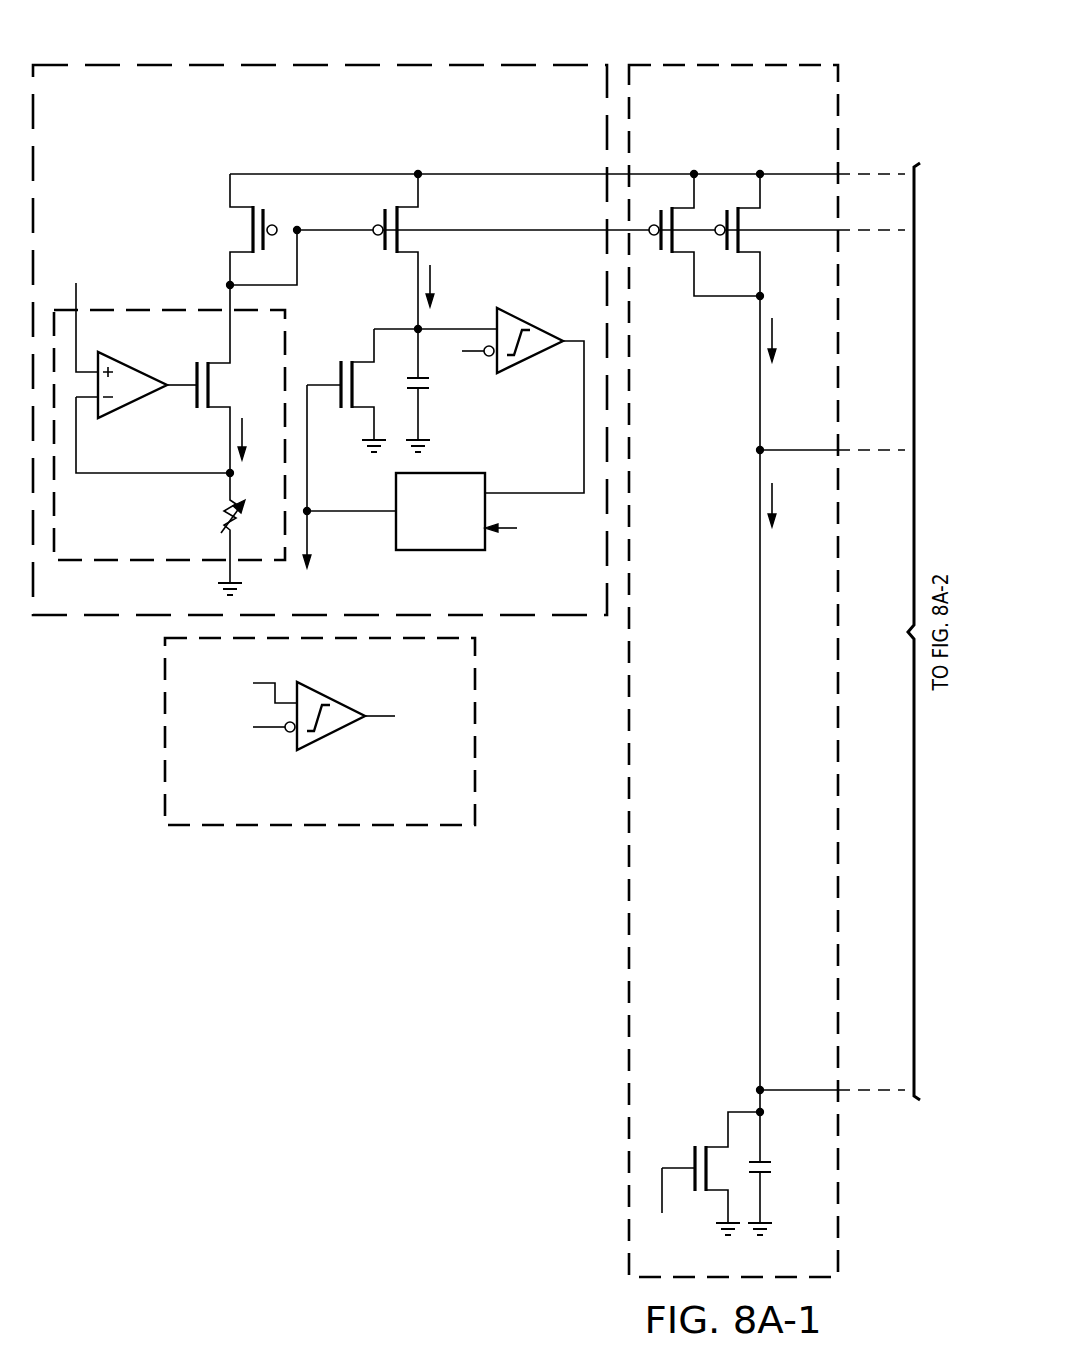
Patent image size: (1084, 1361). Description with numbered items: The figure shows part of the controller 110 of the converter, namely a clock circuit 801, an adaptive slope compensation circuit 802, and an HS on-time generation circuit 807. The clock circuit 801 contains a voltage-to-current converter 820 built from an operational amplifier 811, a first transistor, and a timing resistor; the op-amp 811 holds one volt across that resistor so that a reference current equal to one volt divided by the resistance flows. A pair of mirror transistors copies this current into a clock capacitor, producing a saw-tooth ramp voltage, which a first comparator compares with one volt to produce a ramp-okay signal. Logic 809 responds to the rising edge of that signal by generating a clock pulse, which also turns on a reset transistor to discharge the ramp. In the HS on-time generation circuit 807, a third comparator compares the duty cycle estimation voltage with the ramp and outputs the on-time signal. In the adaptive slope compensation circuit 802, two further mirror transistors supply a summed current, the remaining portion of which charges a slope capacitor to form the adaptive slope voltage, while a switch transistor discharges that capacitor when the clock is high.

The clock circuit 801 is at (469, 308).
The adaptive slope compensation circuit 802 is at (751, 56).
The HS on-time generation circuit 807 is at (155, 746).
The logic 809 is at (440, 550).
The operational amplifier 811 is at (128, 366).
The voltage-to-current converter 820 is at (169, 401).
The controller 110 is at (235, 1010).